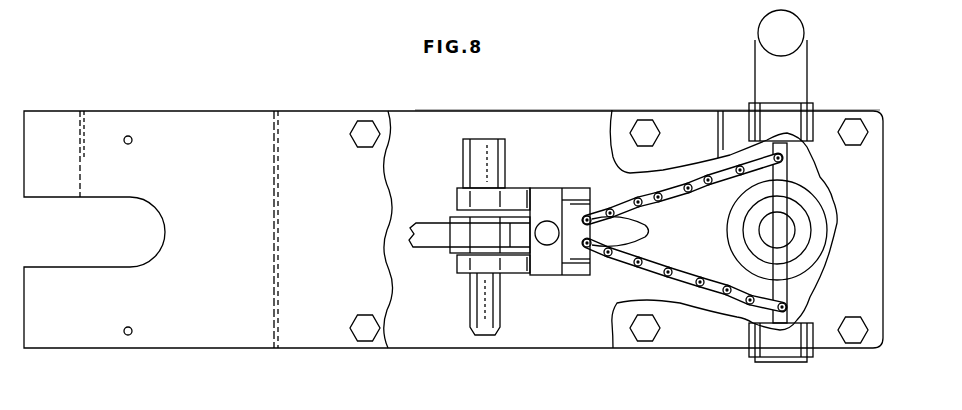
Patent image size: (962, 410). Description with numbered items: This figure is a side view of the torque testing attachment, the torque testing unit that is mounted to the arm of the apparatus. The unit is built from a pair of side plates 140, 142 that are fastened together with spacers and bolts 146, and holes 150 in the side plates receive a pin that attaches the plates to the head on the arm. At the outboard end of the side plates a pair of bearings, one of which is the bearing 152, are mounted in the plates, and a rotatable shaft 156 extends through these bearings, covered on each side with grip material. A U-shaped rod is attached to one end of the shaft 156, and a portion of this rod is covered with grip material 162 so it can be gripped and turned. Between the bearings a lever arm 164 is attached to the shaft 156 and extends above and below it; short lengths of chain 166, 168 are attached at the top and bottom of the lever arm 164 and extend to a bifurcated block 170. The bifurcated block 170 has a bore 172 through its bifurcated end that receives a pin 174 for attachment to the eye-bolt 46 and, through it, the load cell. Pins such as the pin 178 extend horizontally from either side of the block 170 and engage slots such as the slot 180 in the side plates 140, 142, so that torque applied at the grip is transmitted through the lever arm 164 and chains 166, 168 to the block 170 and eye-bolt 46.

The side plate 140 is at (410, 110).
The side plate 142 is at (200, 124).
The bolts 146 is at (358, 126).
The holes 150 is at (132, 140).
The bearing 152 is at (805, 217).
The rotatable shaft 156 is at (763, 232).
The grip material 162 is at (803, 28).
The lever arm 164 is at (782, 178).
The chain 166 is at (606, 209).
The chain 168 is at (632, 263).
The bifurcated block 170 is at (462, 268).
The bore 172 is at (507, 187).
The pin 174 is at (494, 148).
The pin 178 is at (548, 243).
The slot 180 is at (645, 227).
The eye-bolt 46 is at (434, 235).